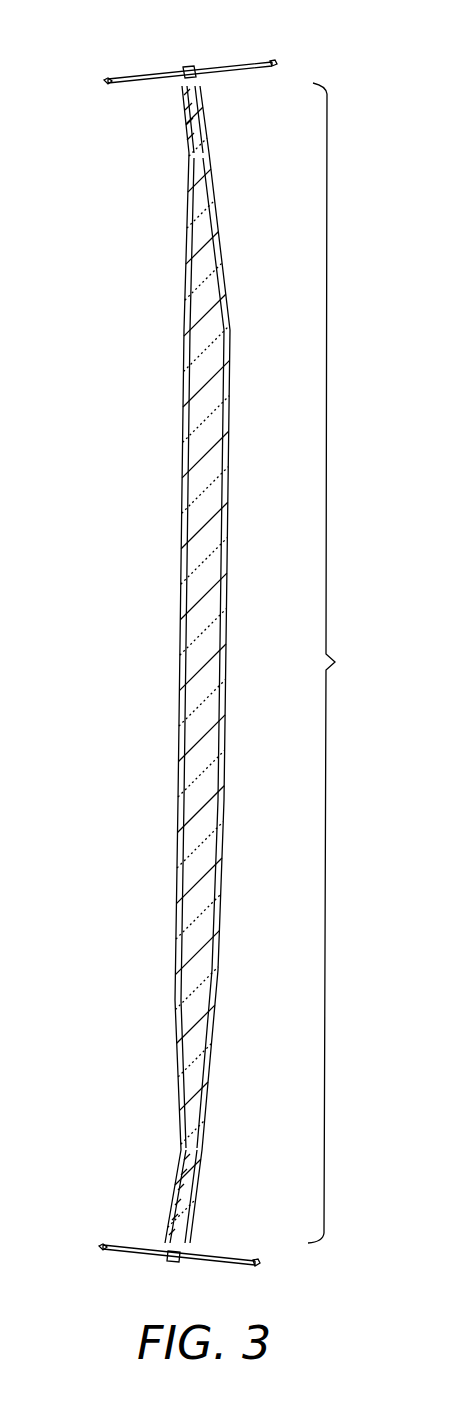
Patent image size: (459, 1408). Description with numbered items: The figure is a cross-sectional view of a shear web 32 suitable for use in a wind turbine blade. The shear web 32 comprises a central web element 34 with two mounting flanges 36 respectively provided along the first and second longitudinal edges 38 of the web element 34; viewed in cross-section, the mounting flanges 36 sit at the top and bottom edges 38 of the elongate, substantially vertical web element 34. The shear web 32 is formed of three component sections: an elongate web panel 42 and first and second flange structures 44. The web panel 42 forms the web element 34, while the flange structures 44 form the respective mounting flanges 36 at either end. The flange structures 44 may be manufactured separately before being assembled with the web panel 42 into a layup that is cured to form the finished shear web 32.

The shear web 32 is at (92, 47).
The central web element 34 is at (341, 663).
The mounting flanges 36 is at (226, 66).
The longitudinal edges 38 is at (183, 90).
The elongate web panel 42 is at (188, 606).
The flange structures 44 is at (202, 86).